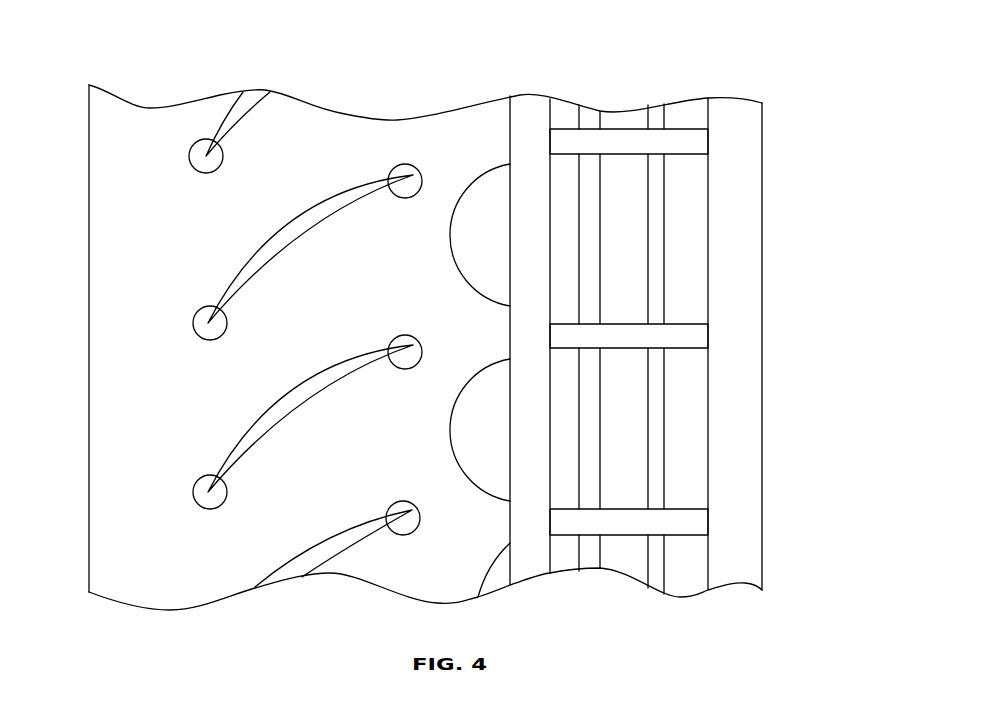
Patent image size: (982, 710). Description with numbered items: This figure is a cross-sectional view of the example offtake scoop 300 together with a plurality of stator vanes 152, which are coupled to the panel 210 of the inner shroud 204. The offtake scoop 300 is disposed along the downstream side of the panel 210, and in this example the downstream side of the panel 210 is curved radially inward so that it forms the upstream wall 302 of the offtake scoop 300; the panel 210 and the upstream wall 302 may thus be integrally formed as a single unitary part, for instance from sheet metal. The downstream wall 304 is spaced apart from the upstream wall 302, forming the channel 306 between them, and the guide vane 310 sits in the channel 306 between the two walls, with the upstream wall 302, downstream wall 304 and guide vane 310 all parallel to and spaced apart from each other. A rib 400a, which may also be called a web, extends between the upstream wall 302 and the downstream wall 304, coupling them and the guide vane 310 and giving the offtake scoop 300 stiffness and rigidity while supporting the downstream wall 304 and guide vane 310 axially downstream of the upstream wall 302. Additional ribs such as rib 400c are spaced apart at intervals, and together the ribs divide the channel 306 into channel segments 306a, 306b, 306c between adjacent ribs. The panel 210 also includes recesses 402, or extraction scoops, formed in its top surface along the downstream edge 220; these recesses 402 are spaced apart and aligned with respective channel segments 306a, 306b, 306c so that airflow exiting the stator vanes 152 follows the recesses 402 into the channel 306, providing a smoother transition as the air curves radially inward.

The stator vanes 152 is at (238, 107).
The inner shroud 204 is at (117, 210).
The panel 210 is at (150, 163).
The downstream edge 220 is at (510, 137).
The offtake scoop 300 is at (641, 323).
The upstream wall 302 is at (530, 162).
The downstream wall 304 is at (725, 169).
The channel 306 is at (697, 250).
The channel segment 306a is at (706, 291).
The channel segment 306b is at (696, 430).
The channel segment 306c is at (688, 575).
The guide vane 310 is at (618, 212).
The rib 400a is at (667, 147).
The rib 400c is at (663, 339).
The recesses 402 is at (468, 203).